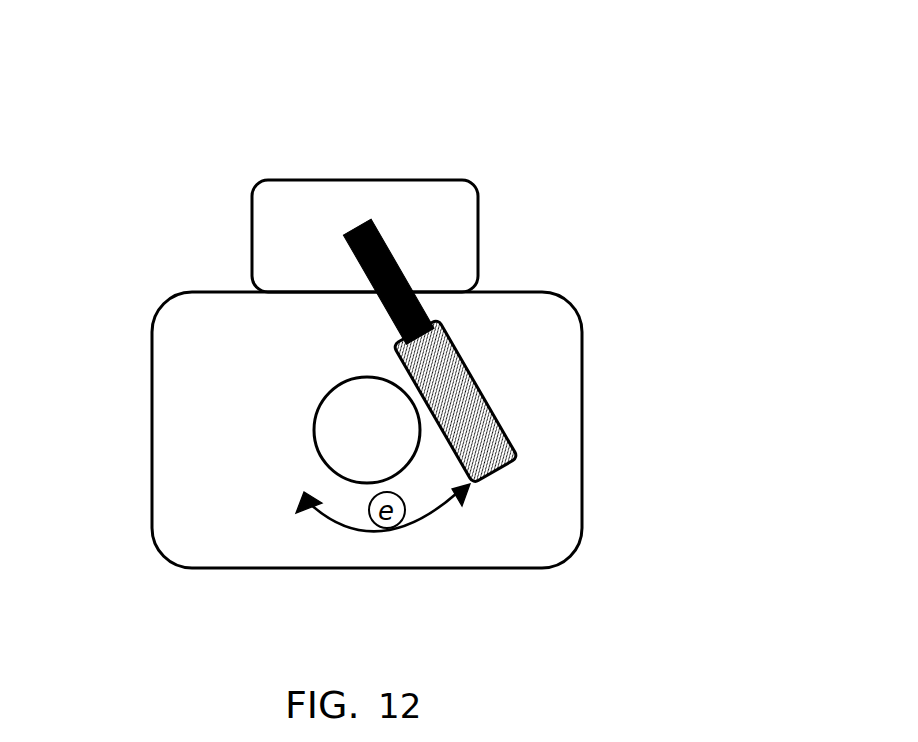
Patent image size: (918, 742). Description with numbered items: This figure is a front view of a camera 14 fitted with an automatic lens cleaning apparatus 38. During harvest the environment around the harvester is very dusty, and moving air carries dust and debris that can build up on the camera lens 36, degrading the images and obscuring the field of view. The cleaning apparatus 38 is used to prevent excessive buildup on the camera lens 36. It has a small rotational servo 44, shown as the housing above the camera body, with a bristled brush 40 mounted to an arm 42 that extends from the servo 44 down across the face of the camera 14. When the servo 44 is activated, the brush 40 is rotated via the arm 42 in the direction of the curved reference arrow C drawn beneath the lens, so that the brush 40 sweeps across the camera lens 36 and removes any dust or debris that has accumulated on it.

The camera 14 is at (700, 57).
The camera lens 36 is at (314, 431).
The lens cleaning apparatus 38 is at (544, 275).
The bristled brush 40 is at (482, 388).
The arm 42 is at (403, 268).
The rotational servo 44 is at (252, 233).